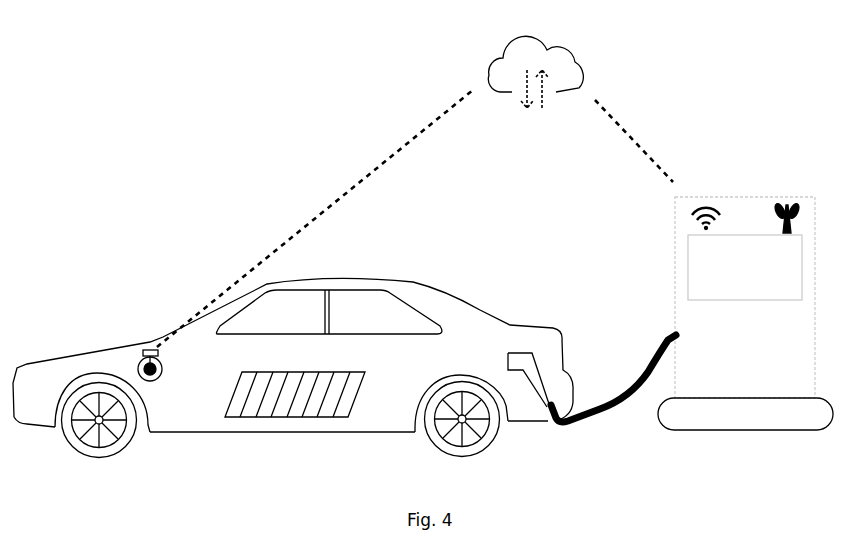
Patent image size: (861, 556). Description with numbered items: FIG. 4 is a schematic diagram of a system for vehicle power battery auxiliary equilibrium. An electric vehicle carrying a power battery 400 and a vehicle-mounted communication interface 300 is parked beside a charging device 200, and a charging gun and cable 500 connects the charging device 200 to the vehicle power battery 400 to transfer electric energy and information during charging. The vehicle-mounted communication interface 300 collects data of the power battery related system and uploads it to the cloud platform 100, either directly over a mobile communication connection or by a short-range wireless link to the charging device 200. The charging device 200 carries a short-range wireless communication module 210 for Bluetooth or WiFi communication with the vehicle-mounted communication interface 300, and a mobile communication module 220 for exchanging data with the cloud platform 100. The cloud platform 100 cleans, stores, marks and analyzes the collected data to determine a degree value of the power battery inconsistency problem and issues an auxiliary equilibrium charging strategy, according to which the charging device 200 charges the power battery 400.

The cloud platform 100 is at (577, 62).
The charging device 200 is at (675, 278).
The short-range wireless communication module 210 is at (785, 200).
The mobile communication module 220 is at (705, 200).
The vehicle-mounted communication interface 300 is at (148, 356).
The power battery 400 is at (270, 393).
The charging gun and cable 500 is at (612, 413).